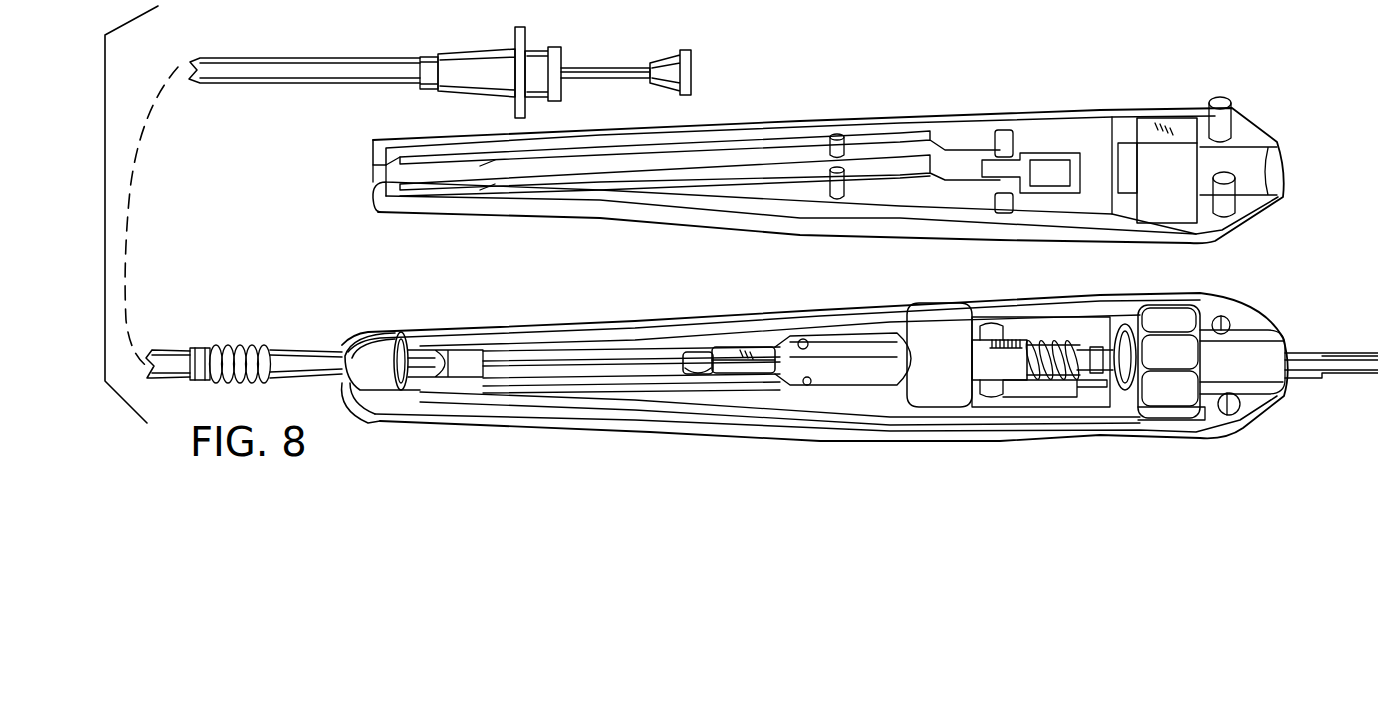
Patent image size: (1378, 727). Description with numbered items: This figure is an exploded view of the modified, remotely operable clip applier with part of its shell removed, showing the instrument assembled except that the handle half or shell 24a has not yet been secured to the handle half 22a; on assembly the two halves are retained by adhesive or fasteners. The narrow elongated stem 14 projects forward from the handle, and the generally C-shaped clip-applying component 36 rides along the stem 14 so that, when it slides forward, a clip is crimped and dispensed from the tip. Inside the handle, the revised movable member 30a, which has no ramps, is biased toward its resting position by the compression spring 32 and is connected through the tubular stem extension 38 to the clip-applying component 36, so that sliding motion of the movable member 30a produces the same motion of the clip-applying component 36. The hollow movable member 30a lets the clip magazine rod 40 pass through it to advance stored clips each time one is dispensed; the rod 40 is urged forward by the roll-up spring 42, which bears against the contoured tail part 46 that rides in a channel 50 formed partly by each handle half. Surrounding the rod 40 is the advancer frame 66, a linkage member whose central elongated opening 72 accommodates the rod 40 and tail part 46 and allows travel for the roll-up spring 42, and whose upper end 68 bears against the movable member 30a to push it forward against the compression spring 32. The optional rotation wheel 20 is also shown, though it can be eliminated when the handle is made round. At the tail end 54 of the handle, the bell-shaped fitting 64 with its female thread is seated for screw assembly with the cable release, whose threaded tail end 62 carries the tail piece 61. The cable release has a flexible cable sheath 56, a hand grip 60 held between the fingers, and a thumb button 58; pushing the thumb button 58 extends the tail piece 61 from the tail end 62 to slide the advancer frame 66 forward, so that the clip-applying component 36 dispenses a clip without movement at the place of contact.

The stem 14 is at (1363, 342).
The rotation wheel 20 is at (1168, 390).
The handle half 22a is at (1248, 413).
The handle half 24a is at (1022, 113).
The movable member 30a is at (1020, 337).
The compression spring 32 is at (1050, 379).
The clip-applying component 36 is at (1338, 355).
The tubular stem extension 38 is at (1086, 378).
The clip magazine rod 40 is at (851, 364).
The roll-up spring 42 is at (696, 353).
The tail part 46 is at (748, 351).
The channel 50 is at (828, 370).
The tail end 54 is at (387, 199).
The cable sheath 56 is at (207, 82).
The thumb button 58 is at (668, 62).
The hand grip 60 is at (518, 45).
The tail piece 61 is at (414, 349).
The tail end 62 is at (283, 350).
The bell-shaped fitting 64 is at (378, 338).
The advancer frame 66 is at (616, 330).
The upper end of the advancer frame 68 is at (943, 346).
The central elongated opening 72 is at (664, 376).